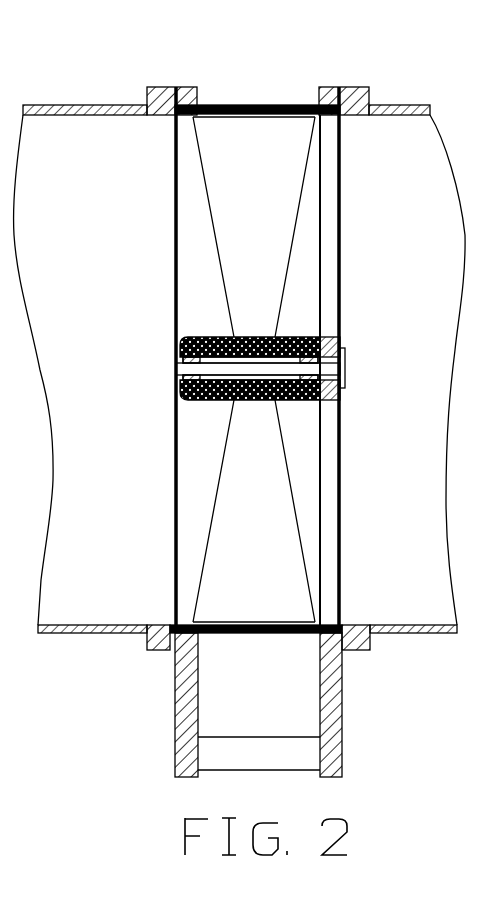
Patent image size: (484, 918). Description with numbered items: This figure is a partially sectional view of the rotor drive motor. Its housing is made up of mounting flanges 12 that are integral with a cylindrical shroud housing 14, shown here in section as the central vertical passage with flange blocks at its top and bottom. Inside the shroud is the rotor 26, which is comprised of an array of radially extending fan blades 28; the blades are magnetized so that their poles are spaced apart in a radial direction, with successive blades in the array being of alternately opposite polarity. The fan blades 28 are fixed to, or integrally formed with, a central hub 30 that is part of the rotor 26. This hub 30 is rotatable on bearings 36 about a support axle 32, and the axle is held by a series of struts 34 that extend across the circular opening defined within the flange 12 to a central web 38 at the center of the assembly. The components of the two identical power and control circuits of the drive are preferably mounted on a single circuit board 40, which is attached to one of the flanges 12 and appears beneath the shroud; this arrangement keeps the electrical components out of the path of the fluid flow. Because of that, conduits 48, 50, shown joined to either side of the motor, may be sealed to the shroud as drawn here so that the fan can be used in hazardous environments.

The mounting flange 12 is at (199, 92).
The cylindrical shroud housing 14 is at (246, 105).
The rotor 26 is at (308, 186).
The fan blades 28 is at (272, 240).
The central hub 30 is at (292, 337).
The support axle 32 is at (186, 370).
The struts 34 is at (331, 452).
The bearings 36 is at (178, 357).
The central web 38 is at (340, 392).
The circuit board 40 is at (256, 753).
The conduit 48 is at (103, 106).
The conduit 50 is at (428, 634).